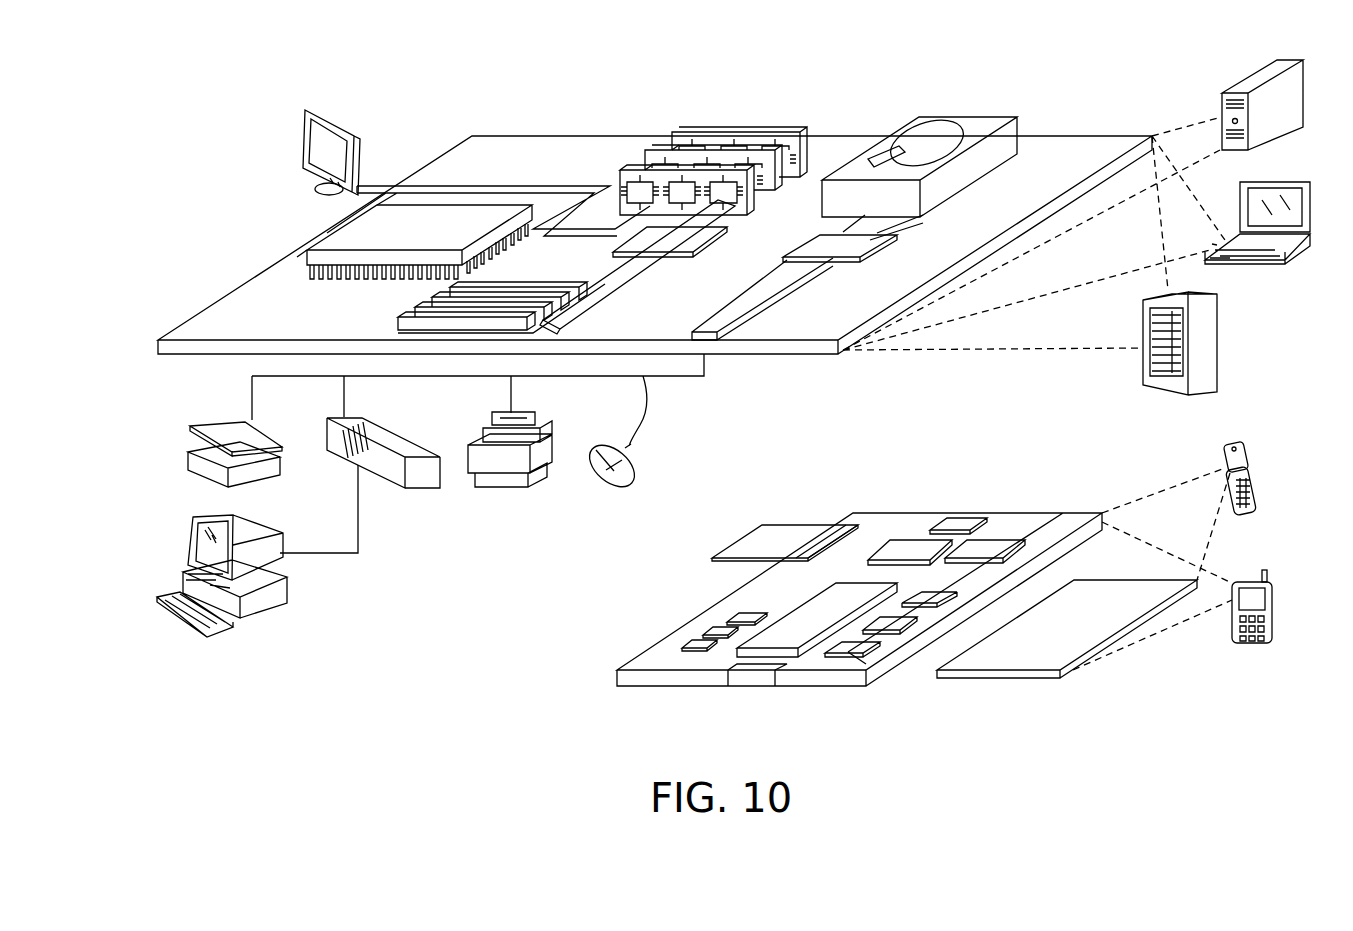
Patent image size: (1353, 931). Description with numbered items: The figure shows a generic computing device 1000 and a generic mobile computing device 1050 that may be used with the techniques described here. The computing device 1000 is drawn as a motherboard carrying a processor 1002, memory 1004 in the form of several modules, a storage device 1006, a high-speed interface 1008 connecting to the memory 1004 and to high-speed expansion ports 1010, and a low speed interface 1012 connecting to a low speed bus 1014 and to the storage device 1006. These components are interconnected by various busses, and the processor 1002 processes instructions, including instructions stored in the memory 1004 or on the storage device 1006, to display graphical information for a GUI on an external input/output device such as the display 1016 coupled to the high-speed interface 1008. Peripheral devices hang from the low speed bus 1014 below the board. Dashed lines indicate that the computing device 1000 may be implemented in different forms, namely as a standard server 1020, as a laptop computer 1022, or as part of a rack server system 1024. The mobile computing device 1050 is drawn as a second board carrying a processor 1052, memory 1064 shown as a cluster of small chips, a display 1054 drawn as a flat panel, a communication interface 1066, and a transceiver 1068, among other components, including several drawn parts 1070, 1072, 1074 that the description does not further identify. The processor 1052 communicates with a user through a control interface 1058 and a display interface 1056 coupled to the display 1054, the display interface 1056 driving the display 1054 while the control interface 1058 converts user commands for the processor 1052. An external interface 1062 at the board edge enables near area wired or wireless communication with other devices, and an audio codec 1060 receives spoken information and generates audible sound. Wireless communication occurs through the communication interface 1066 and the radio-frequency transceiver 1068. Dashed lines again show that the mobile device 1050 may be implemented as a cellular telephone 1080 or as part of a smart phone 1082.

The computing device 1000 is at (425, 86).
The processor 1002 is at (327, 232).
The memory 1004 is at (743, 130).
The storage device 1006 is at (958, 117).
The high-speed interface 1008 is at (682, 235).
The high-speed expansion ports 1010 is at (413, 308).
The low speed interface 1012 is at (813, 237).
The low speed bus 1014 is at (712, 330).
The display 1016 is at (313, 112).
The standard server 1020 is at (1243, 87).
The laptop computer 1022 is at (1293, 180).
The rack server system 1024 is at (1218, 343).
The mobile computing device 1050 is at (578, 690).
The processor 1052 is at (790, 625).
The display 1054 is at (1103, 592).
The display interface 1056 is at (860, 648).
The control interface 1058 is at (897, 622).
The audio codec 1060 is at (933, 598).
The external interface 1062 is at (753, 675).
The memory 1064 is at (713, 628).
The communication interface 1066 is at (912, 545).
The transceiver 1068 is at (997, 547).
The chip 1070 is at (958, 523).
The slot 1072 is at (840, 525).
The panel 1074 is at (765, 525).
The cellular telephone 1080 is at (1238, 442).
The smart phone 1082 is at (1248, 582).